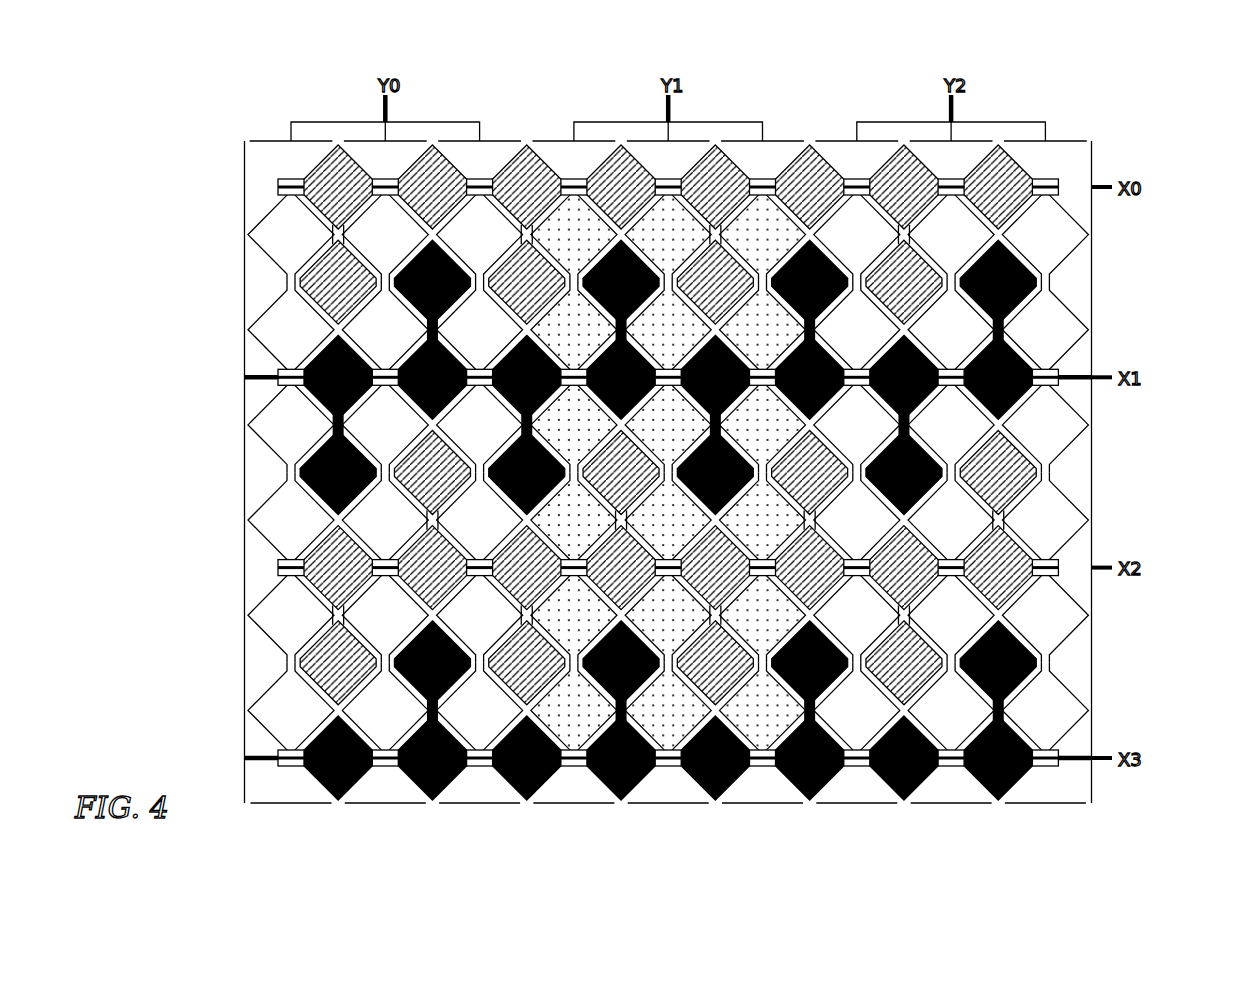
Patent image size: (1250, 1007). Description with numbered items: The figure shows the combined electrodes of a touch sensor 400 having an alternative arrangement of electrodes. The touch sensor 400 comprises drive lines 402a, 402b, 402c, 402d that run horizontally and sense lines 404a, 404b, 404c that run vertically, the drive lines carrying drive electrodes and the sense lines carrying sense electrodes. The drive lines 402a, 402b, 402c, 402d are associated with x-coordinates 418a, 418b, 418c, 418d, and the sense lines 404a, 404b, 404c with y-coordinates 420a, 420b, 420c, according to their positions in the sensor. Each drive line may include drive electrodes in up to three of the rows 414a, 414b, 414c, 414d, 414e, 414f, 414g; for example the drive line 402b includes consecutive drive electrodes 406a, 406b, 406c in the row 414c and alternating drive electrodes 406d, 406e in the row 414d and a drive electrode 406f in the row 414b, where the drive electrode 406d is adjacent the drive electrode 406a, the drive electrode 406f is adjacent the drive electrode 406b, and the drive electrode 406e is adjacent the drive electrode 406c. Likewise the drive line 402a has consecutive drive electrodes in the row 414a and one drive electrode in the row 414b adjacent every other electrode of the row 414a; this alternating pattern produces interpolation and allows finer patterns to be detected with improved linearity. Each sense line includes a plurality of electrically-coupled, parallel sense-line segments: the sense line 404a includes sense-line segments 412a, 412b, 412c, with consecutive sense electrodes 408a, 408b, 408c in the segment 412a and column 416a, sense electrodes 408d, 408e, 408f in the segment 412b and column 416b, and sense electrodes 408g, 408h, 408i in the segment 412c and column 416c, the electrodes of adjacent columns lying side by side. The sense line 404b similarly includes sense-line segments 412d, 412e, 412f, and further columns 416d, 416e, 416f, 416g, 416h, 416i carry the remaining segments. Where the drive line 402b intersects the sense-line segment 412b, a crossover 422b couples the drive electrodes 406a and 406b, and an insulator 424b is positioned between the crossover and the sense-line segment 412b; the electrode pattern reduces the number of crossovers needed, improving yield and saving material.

The touch sensor 400 is at (150, 364).
The drive line 402a is at (1107, 184).
The drive line 402b is at (1107, 374).
The drive line 402c is at (1107, 564).
The drive line 402d is at (1107, 755).
The sense line 404a is at (383, 118).
The sense line 404b is at (666, 118).
The sense line 404c is at (949, 118).
The drive electrode 406a is at (323, 360).
The drive electrode 406b is at (347, 515).
The drive electrode 406c is at (540, 363).
The drive electrode 406d is at (318, 492).
The drive electrode 406e is at (529, 488).
The drive electrode 406f is at (432, 258).
The sense electrode 408a is at (277, 220).
The sense electrode 408b is at (290, 307).
The sense electrode 408c is at (277, 423).
The sense electrode 408d is at (408, 241).
The sense electrode 408e is at (340, 300).
The sense electrode 408f is at (323, 485).
The sense electrode 408g is at (503, 241).
The sense electrode 408h is at (503, 335).
The sense electrode 408i is at (468, 430).
The sense-line segment 412a is at (291, 803).
The sense-line segment 412b is at (385, 803).
The sense-line segment 412c is at (480, 803).
The sense-line segment 412d is at (582, 804).
The sense-line segment 412e is at (672, 804).
The sense-line segment 412f is at (767, 804).
The row 414a is at (724, 187).
The row 414b is at (724, 301).
The row 414c is at (723, 377).
The row 414d is at (817, 453).
The row 414e is at (724, 568).
The row 414f is at (722, 682).
The row 414g is at (724, 758).
The column 416a is at (277, 363).
The column 416b is at (385, 419).
The column 416c is at (480, 419).
The column 416d is at (574, 419).
The column 416e is at (668, 419).
The column 416f is at (763, 419).
The column 416g is at (857, 444).
The column 416h is at (951, 444).
The column 416i is at (1045, 444).
The x-coordinate 418a is at (1133, 201).
The x-coordinate 418b is at (1133, 391).
The x-coordinate 418c is at (1133, 582).
The x-coordinate 418d is at (1133, 772).
The y-coordinate 420a is at (402, 83).
The y-coordinate 420b is at (685, 83).
The y-coordinate 420c is at (968, 83).
The crossover 422b is at (383, 373).
The insulator 424b is at (373, 433).